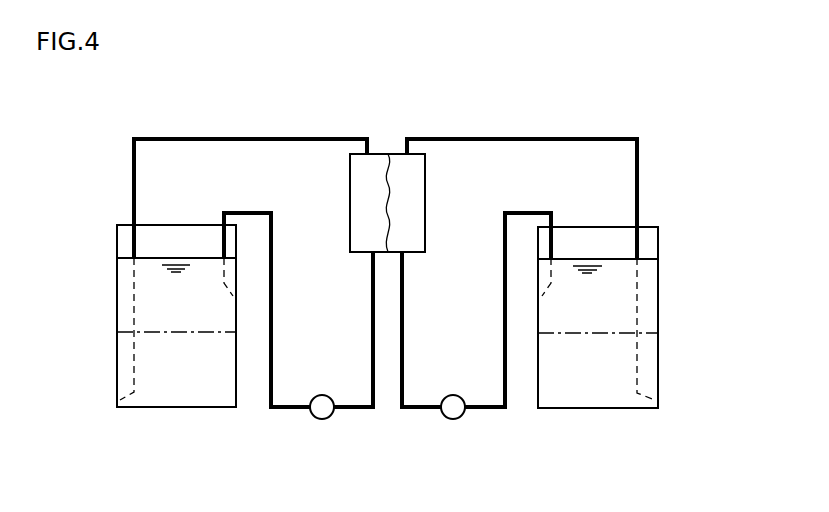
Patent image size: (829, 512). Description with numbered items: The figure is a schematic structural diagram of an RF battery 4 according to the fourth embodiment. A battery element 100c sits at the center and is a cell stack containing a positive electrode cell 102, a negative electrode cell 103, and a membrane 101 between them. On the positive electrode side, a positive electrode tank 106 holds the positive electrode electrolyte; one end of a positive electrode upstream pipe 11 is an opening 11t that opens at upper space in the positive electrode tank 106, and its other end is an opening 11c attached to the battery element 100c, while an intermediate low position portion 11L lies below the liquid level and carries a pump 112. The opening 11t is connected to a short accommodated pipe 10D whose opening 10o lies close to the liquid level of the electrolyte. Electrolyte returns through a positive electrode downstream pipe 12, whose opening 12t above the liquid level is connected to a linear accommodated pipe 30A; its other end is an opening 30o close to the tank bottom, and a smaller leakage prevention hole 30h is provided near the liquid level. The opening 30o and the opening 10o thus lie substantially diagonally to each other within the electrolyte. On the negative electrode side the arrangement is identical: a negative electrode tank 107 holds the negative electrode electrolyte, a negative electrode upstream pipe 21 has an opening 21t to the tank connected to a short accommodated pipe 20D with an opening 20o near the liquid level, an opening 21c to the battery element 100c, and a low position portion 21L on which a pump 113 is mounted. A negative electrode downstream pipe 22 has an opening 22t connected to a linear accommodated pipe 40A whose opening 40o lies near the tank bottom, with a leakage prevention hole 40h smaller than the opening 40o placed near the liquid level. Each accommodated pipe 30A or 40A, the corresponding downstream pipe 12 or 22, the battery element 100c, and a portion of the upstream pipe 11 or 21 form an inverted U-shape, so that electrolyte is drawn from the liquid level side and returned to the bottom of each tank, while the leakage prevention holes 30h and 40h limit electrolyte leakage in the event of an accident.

The RF battery 4 is at (648, 176).
The battery element 100c is at (415, 77).
The membrane 101 is at (385, 150).
The positive electrode cell 102 is at (362, 163).
The negative electrode cell 103 is at (412, 163).
The positive electrode downstream pipe 12 is at (230, 137).
The opening of positive electrode downstream pipe 12t is at (133, 225).
The negative electrode downstream pipe 22 is at (518, 137).
The opening to the negative electrode tank of negative electrode downstream pipe 22t is at (640, 225).
The positive electrode upstream pipe 11 is at (269, 360).
The opening of positive electrode upstream pipe 11t is at (222, 225).
The opening of positive electrode upstream pipe to battery element 11c is at (368, 262).
The low position portion 11L is at (297, 409).
The accommodated pipe 10D is at (226, 270).
The opening of accommodated pipe 10D 10o is at (233, 297).
The negative electrode upstream pipe 21 is at (507, 360).
The opening to the negative electrode tank of negative electrode upstream pipe 21t is at (553, 223).
The opening to battery element of negative electrode upstream pipe 21c is at (406, 262).
The low position portion 21L is at (490, 409).
The accommodated pipe 20D is at (549, 272).
The opening of accommodated pipe 20D 20o is at (542, 298).
The pump 112 is at (334, 419).
The pump 113 is at (441, 419).
The positive electrode tank 106 is at (185, 409).
The leakage prevention hole 30h is at (134, 263).
The accommodated pipe 30A is at (120, 345).
The opening of accommodated pipe 30A 30o is at (120, 400).
The negative electrode tank 107 is at (628, 410).
The leakage prevention hole 40h is at (640, 265).
The accommodated pipe 40A is at (640, 350).
The opening of accommodated pipe 40A 40o is at (659, 402).